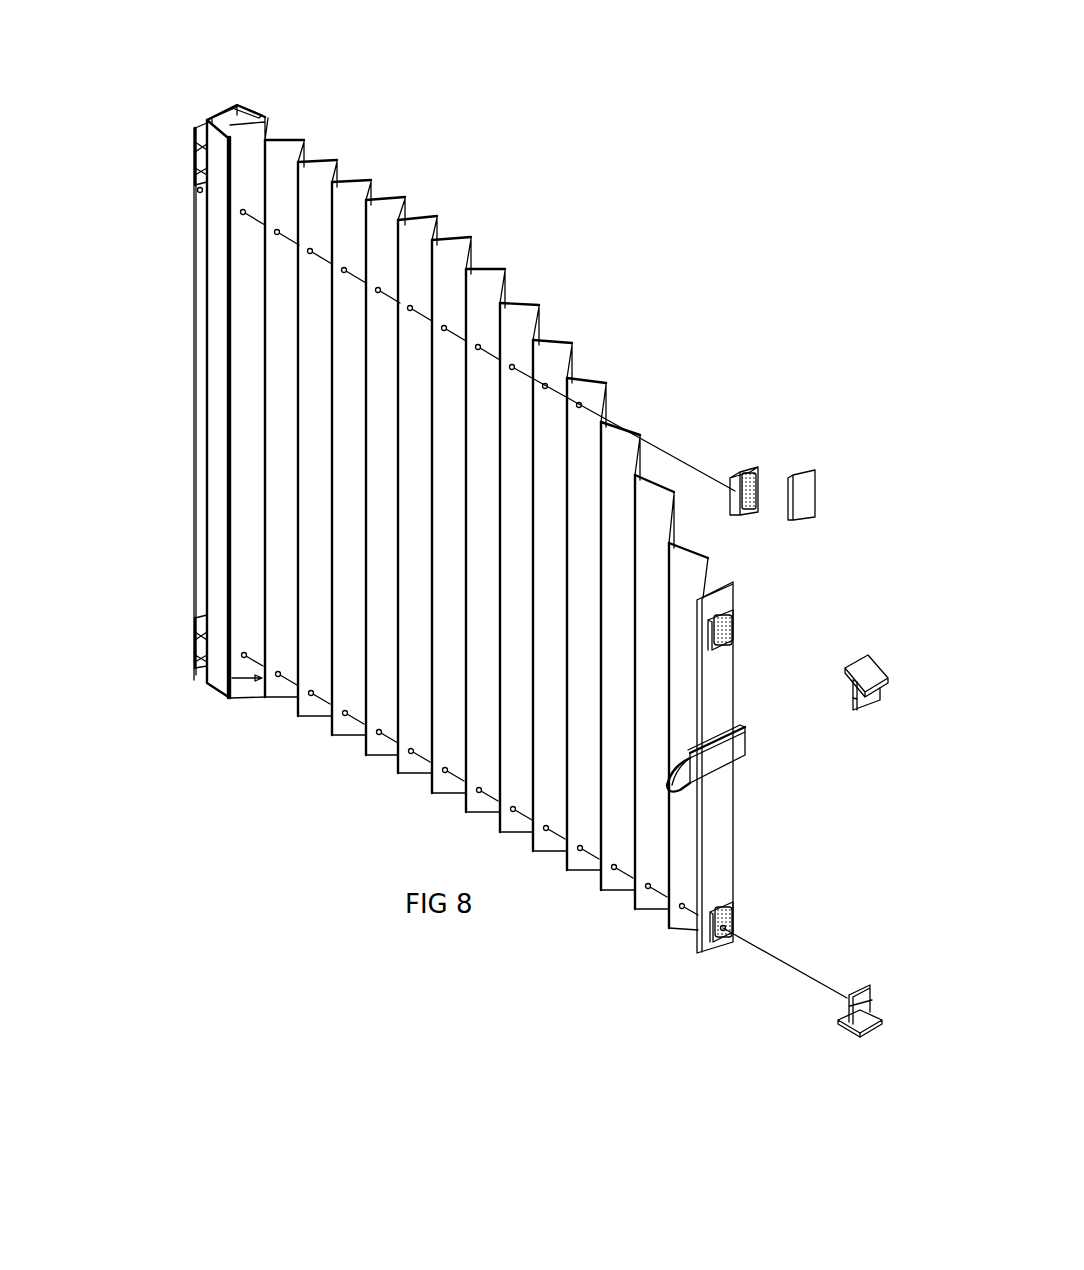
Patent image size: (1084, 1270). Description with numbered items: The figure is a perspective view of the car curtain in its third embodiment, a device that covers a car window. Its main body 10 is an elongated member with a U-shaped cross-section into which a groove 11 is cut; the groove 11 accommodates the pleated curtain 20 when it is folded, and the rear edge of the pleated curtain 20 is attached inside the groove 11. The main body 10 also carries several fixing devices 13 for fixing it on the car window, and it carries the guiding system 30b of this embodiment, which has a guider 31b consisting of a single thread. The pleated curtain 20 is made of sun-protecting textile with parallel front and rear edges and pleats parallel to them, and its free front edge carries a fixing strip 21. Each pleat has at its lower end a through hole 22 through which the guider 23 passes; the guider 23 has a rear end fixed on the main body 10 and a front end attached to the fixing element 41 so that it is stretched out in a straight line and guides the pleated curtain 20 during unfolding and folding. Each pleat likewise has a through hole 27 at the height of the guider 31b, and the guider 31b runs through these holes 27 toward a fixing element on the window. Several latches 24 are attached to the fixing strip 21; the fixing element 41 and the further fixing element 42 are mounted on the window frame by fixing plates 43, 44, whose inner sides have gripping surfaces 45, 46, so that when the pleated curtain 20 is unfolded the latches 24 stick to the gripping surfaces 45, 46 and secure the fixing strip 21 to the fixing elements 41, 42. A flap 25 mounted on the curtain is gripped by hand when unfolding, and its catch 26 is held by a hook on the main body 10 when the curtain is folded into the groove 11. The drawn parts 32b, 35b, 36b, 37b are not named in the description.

The main body 10 is at (214, 448).
The groove 11 is at (237, 100).
The fixing devices 13 is at (195, 150).
The pleated curtain 20 is at (488, 296).
The fixing strip 21 is at (725, 818).
The through hole 22 is at (312, 696).
The guider 23 is at (748, 945).
The latches 24 is at (733, 605).
The flap 25 is at (735, 767).
The catch 26 is at (735, 725).
The through hole 27 is at (410, 305).
The guiding system 30b is at (188, 294).
The guider 31b is at (672, 455).
The hinge strip 32b is at (195, 252).
The rivet 35b is at (198, 189).
The latch plate 36b is at (760, 482).
The spacer plate 37b is at (812, 488).
The fixing element 41 is at (857, 1036).
The fixing elements 42 is at (880, 675).
The fixing plate 43 is at (875, 1038).
The fixing plate 44 is at (867, 704).
The gripping surface 45 is at (855, 995).
The gripping surface 46 is at (853, 698).